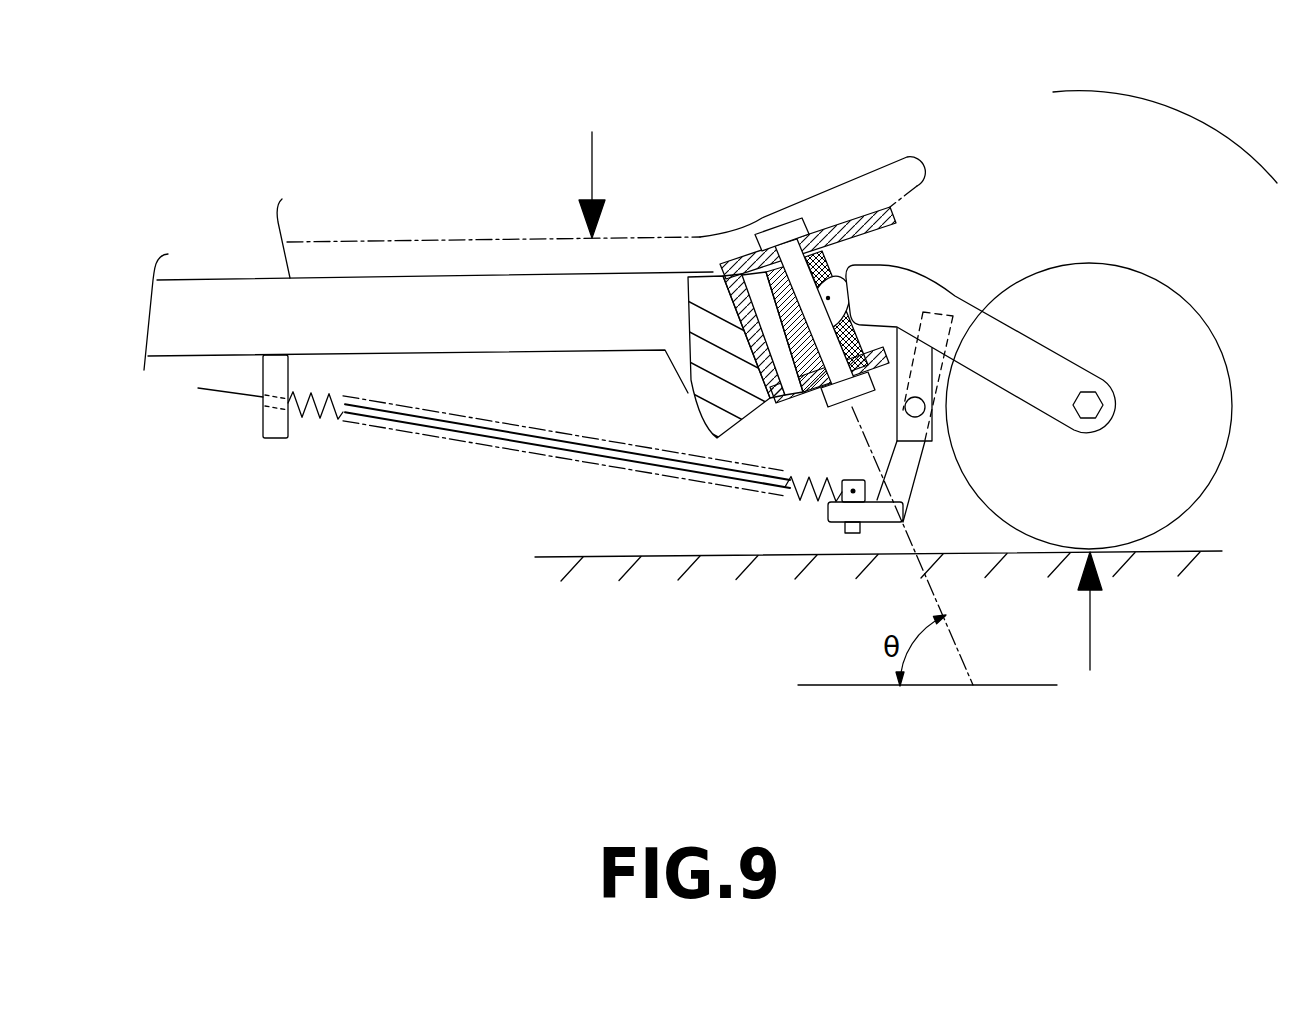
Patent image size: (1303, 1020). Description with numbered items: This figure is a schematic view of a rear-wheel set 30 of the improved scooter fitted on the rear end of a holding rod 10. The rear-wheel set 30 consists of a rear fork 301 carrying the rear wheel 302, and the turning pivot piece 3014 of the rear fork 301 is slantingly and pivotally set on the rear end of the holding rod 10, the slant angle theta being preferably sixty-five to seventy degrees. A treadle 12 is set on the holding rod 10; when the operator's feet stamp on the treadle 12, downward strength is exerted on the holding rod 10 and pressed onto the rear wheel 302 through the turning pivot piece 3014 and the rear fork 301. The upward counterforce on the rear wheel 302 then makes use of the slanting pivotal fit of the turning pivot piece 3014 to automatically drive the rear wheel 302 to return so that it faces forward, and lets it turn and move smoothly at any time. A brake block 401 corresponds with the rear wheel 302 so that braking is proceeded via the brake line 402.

The holding rod 10 is at (530, 308).
The treadle 12 is at (390, 255).
The rear-wheel set 30 is at (998, 371).
The rear fork 301 is at (922, 293).
The rear wheel 302 is at (1123, 294).
The turning pivot piece 3014 is at (832, 297).
The brake block 401 is at (845, 510).
The brake line 402 is at (488, 433).